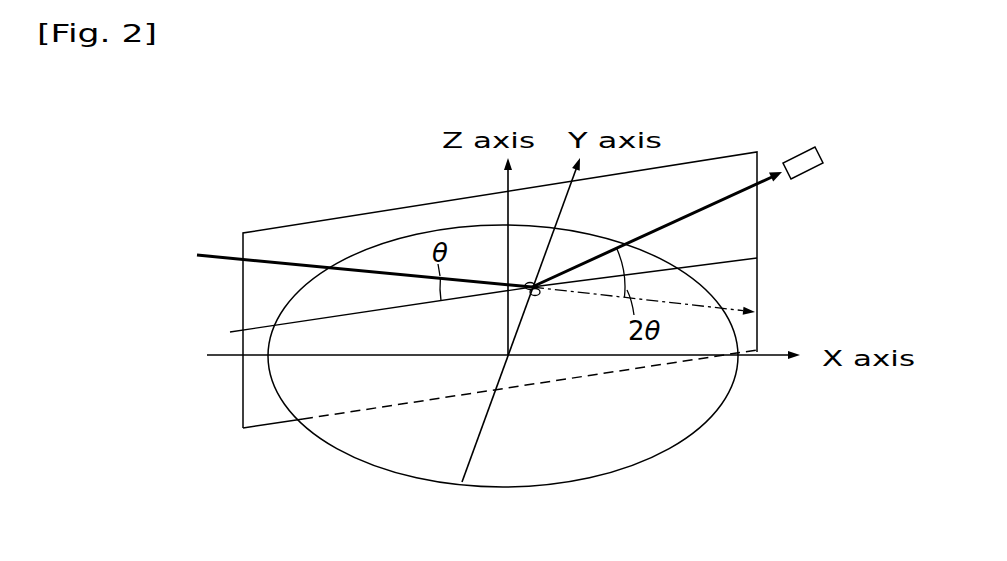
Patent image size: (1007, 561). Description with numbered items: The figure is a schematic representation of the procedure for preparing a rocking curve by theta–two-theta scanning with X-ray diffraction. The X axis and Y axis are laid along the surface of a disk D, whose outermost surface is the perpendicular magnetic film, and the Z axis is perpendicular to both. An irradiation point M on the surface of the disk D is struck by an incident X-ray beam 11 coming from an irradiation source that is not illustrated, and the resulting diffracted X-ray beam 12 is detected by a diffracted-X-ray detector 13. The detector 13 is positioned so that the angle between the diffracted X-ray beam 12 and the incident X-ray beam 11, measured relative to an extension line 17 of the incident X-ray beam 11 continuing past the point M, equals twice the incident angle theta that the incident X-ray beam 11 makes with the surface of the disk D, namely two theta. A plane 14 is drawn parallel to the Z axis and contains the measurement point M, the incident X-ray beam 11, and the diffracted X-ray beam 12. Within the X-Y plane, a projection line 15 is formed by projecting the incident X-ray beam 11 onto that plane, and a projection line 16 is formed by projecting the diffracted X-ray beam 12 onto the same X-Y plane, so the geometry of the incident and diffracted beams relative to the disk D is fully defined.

The incident X-ray beam 11 is at (277, 262).
The diffracted X-ray beam 12 is at (728, 197).
The diffracted-X-ray detector 13 is at (822, 153).
The plane 14 is at (330, 228).
The projection line 15 is at (300, 321).
The projection line 16 is at (745, 262).
The extension line 17 is at (745, 305).
The irradiation point M is at (540, 292).
The disk D is at (690, 410).